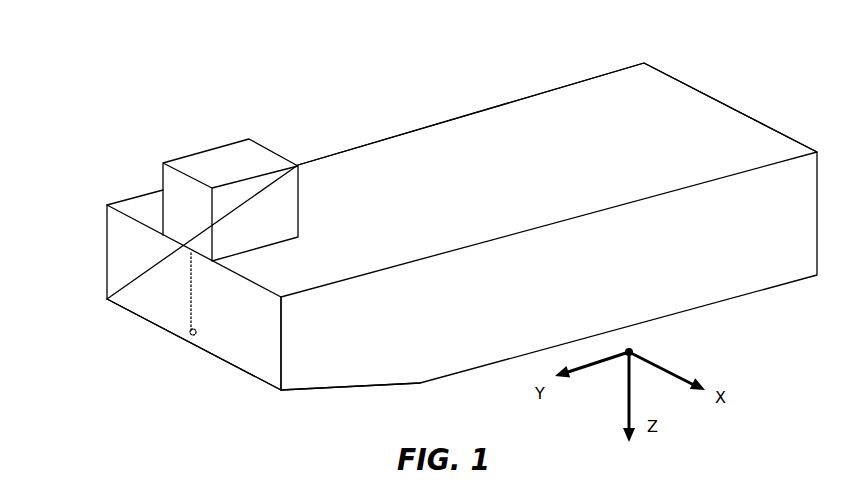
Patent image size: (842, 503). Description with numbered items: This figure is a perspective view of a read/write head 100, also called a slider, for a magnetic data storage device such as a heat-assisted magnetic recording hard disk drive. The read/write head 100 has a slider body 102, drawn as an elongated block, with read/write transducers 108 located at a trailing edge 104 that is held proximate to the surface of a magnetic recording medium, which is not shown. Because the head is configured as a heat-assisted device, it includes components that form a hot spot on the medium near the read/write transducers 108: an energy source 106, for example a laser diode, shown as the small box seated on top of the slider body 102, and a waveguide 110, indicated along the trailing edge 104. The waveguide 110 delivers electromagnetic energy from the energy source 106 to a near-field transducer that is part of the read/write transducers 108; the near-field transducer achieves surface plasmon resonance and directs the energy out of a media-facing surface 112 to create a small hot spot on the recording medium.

The read/write head 100 is at (337, 67).
The slider body 102 is at (408, 135).
The trailing edge 104 is at (110, 277).
The energy source 106 is at (213, 150).
The read/write transducers 108 is at (189, 366).
The waveguide 110 is at (190, 292).
The media-facing surface 112 is at (269, 392).